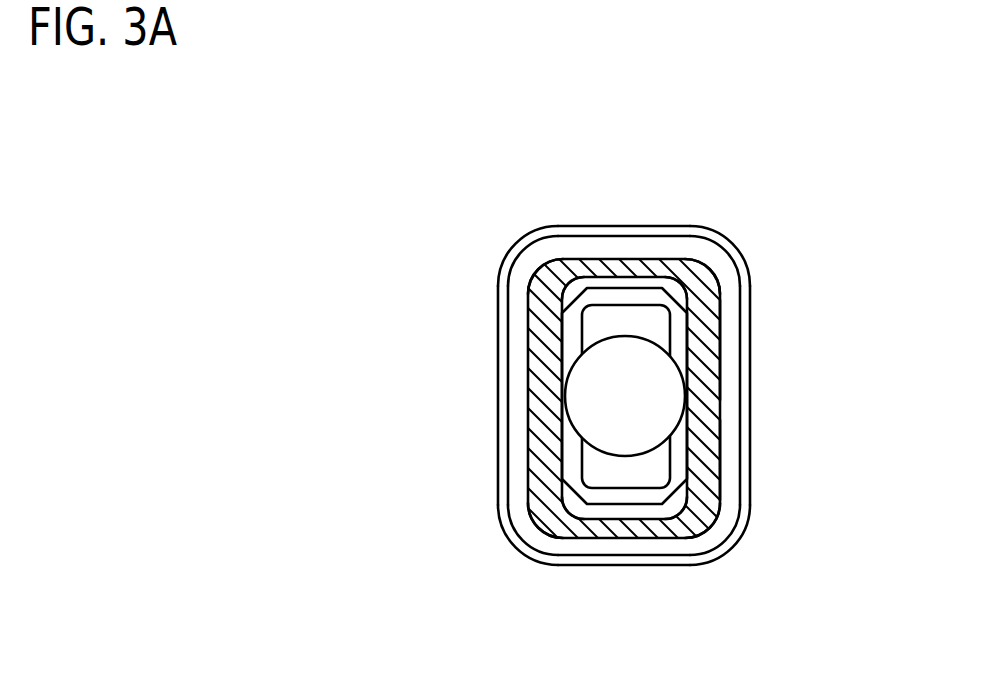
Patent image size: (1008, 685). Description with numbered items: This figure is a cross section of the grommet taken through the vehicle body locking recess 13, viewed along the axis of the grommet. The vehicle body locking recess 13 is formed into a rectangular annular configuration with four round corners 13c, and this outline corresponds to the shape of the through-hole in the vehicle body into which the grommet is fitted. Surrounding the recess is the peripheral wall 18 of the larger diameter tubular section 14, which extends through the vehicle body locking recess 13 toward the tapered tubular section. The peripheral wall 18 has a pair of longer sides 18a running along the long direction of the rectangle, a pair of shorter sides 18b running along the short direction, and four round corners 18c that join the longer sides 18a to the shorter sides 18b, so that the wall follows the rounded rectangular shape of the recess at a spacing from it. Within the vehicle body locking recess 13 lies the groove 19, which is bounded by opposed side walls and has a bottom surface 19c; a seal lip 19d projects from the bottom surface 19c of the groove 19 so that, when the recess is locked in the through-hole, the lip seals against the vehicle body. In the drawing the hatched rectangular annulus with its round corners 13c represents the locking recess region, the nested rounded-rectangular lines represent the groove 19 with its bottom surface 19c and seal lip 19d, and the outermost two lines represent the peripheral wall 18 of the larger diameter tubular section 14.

The larger diameter tubular section 14 is at (604, 362).
The peripheral wall 18 is at (601, 377).
The longer sides 18a is at (497, 400).
The shorter sides 18b is at (626, 226).
The round corners 18c is at (533, 240).
The groove 19 is at (660, 243).
The bottom surface 19c is at (718, 410).
The seal lip 19d is at (718, 460).
The vehicle body locking recess 13 is at (667, 362).
The round corners 13c is at (553, 260).